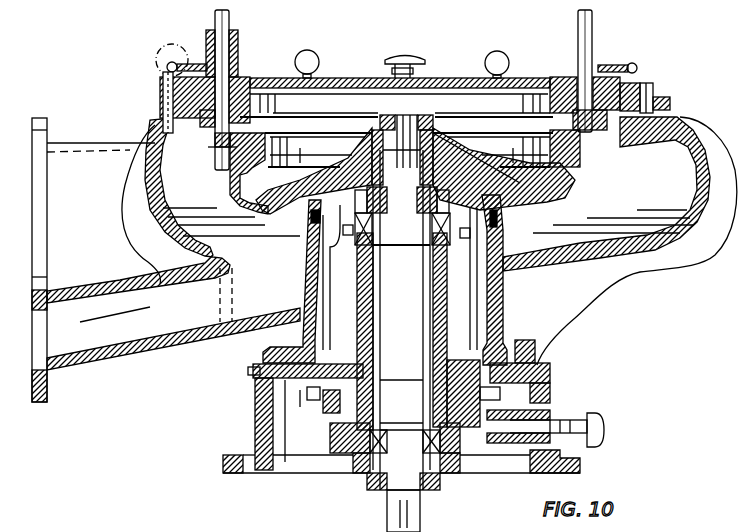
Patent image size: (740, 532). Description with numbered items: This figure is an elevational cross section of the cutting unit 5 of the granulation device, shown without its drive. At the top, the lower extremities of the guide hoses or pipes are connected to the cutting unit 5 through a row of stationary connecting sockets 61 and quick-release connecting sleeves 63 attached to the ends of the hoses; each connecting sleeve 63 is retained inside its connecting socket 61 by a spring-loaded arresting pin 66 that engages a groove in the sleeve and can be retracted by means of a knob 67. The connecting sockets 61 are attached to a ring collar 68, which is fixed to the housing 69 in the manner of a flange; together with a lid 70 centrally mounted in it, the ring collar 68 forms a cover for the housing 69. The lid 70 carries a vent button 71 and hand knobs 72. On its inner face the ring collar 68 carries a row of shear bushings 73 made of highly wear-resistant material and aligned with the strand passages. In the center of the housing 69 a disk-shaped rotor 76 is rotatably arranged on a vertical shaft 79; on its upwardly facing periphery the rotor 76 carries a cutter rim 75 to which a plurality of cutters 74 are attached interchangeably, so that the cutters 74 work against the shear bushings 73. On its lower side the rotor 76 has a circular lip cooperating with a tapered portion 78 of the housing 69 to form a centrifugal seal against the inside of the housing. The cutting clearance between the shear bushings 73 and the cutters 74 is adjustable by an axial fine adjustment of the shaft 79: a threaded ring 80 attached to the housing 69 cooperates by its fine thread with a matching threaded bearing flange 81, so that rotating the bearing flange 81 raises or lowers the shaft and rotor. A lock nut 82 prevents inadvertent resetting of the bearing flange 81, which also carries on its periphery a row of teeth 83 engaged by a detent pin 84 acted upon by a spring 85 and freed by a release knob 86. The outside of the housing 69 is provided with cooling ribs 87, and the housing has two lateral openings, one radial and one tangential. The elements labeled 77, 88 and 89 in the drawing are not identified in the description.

The cutting unit 5 is at (682, 118).
The connecting socket 61 is at (237, 60).
The connecting sleeve 63 is at (233, 43).
The arresting pin 66 is at (607, 68).
The knob 67 is at (165, 69).
The ring collar 68 is at (640, 84).
The housing 69 is at (688, 160).
The lid 70 is at (443, 78).
The vent button 71 is at (405, 55).
The hand knobs 72 is at (311, 59).
The shear bushings 73 is at (570, 130).
The cutters 74 is at (227, 136).
The cutter rim 75 is at (267, 208).
The rotor 76 is at (572, 198).
The support column 77 is at (500, 219).
The tapered portion 78 is at (486, 225).
The shaft 79 is at (412, 301).
The threaded ring 80 is at (320, 425).
The bearing flange 81 is at (343, 452).
The lock nut 82 is at (500, 393).
The teeth 83 is at (340, 430).
The detent pin 84 is at (573, 424).
The spring 85 is at (513, 443).
The release knob 86 is at (605, 427).
The cooling ribs 87 is at (701, 252).
The pipe 88 is at (137, 352).
The duct 89 is at (57, 145).